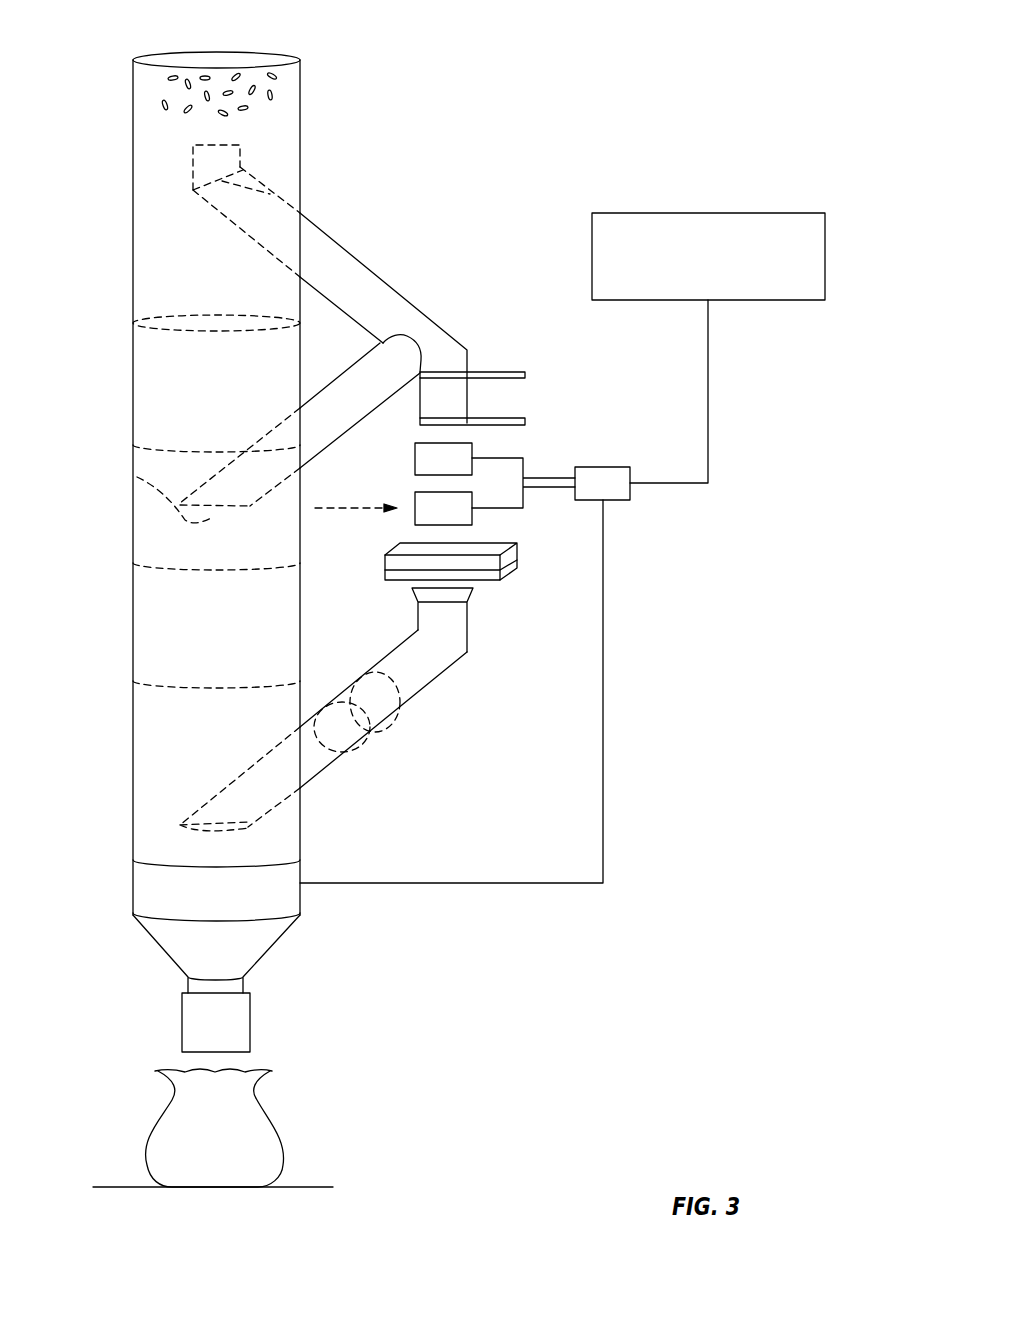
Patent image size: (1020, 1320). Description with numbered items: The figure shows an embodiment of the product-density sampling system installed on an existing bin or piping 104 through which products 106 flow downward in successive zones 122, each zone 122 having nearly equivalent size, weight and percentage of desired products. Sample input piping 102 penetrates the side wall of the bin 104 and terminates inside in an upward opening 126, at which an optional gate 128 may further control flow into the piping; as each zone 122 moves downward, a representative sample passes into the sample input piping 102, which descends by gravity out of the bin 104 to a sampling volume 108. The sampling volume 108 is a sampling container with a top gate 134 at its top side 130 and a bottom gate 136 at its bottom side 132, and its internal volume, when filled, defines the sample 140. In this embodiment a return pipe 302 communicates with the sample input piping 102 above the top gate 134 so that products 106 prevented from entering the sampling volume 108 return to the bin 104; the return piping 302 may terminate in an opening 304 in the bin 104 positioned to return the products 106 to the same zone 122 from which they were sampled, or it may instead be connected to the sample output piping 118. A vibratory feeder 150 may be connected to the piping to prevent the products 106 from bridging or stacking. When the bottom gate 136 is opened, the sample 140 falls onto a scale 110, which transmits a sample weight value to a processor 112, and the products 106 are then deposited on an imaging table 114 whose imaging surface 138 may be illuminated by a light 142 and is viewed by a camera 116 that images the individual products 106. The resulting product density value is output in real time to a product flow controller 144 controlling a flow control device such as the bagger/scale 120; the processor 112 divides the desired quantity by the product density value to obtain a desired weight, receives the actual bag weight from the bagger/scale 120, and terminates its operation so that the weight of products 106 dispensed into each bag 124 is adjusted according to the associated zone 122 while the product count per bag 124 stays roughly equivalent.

The sample input piping 102 is at (370, 270).
The bin or piping 104 is at (133, 125).
The products 106 is at (205, 77).
The sampling volume 108 is at (460, 408).
The scale 110 is at (415, 460).
The processor 112 is at (615, 467).
The imaging table 114 is at (510, 556).
The camera 116 is at (415, 513).
The sample output piping 118 is at (470, 628).
The bagger/scale 120 is at (182, 1020).
The zone 122 is at (168, 392).
The bag 124 is at (165, 1132).
The upward opening 126 is at (213, 142).
The gate 128 is at (290, 180).
The top side 130 is at (437, 378).
The bottom side 132 is at (452, 418).
The top gate 134 is at (508, 372).
The bottom gate 136 is at (508, 425).
The imaging surface 138 is at (500, 540).
The sample 140 is at (400, 737).
The light 142 is at (348, 508).
The product flow controller 144 is at (133, 883).
The vibratory feeder 150 is at (510, 572).
The return pipe 302 is at (345, 380).
The opening 304 is at (137, 477).